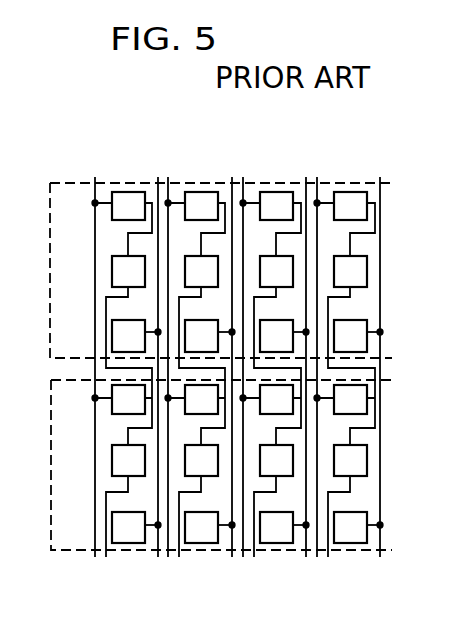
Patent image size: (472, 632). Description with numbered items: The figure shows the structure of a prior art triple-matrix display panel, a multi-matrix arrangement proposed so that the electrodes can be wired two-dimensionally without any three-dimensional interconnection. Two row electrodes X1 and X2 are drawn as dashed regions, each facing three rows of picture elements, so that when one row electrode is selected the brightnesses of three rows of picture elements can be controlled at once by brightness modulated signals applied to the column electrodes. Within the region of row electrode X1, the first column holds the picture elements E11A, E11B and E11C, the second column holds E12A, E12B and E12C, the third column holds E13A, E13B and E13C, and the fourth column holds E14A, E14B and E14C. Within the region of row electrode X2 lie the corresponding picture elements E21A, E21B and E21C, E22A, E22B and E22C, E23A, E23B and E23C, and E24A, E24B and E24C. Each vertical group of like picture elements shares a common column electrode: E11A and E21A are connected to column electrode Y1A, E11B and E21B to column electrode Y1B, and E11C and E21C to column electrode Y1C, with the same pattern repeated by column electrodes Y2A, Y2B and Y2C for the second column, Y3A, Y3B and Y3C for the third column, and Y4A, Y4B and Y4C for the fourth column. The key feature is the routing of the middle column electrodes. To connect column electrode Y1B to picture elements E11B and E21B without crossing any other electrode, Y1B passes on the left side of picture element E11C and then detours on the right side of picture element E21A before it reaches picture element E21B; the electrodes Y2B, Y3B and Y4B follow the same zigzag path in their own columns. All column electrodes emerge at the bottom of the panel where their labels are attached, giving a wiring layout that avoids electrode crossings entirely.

The row electrode X1 is at (49, 302).
The row electrode X2 is at (51, 474).
The column electrode Y1A is at (95, 557).
The column electrode Y1B is at (106, 557).
The column electrode Y1C is at (158, 557).
The column electrode Y2A is at (168, 557).
The column electrode Y2B is at (179, 557).
The column electrode Y2C is at (232, 557).
The column electrode Y3A is at (243, 557).
The column electrode Y3B is at (254, 557).
The column electrode Y3C is at (306, 557).
The column electrode Y4A is at (317, 557).
The column electrode Y4B is at (328, 557).
The column electrode Y4C is at (380, 557).
The picture element E11A is at (124, 223).
The picture element E11B is at (132, 271).
The picture element E11C is at (135, 336).
The picture element E12A is at (197, 223).
The picture element E12B is at (205, 271).
The picture element E12C is at (208, 336).
The picture element E13A is at (272, 223).
The picture element E13B is at (280, 271).
The picture element E13C is at (283, 336).
The picture element E14A is at (346, 223).
The picture element E14B is at (354, 271).
The picture element E14C is at (357, 336).
The picture element E21A is at (124, 399).
The picture element E21B is at (132, 460).
The picture element E21C is at (135, 527).
The picture element E22A is at (197, 399).
The picture element E22B is at (205, 460).
The picture element E22C is at (208, 527).
The picture element E23A is at (272, 399).
The picture element E23B is at (280, 460).
The picture element E23C is at (283, 527).
The picture element E24A is at (346, 399).
The picture element E24B is at (354, 460).
The picture element E24C is at (357, 527).